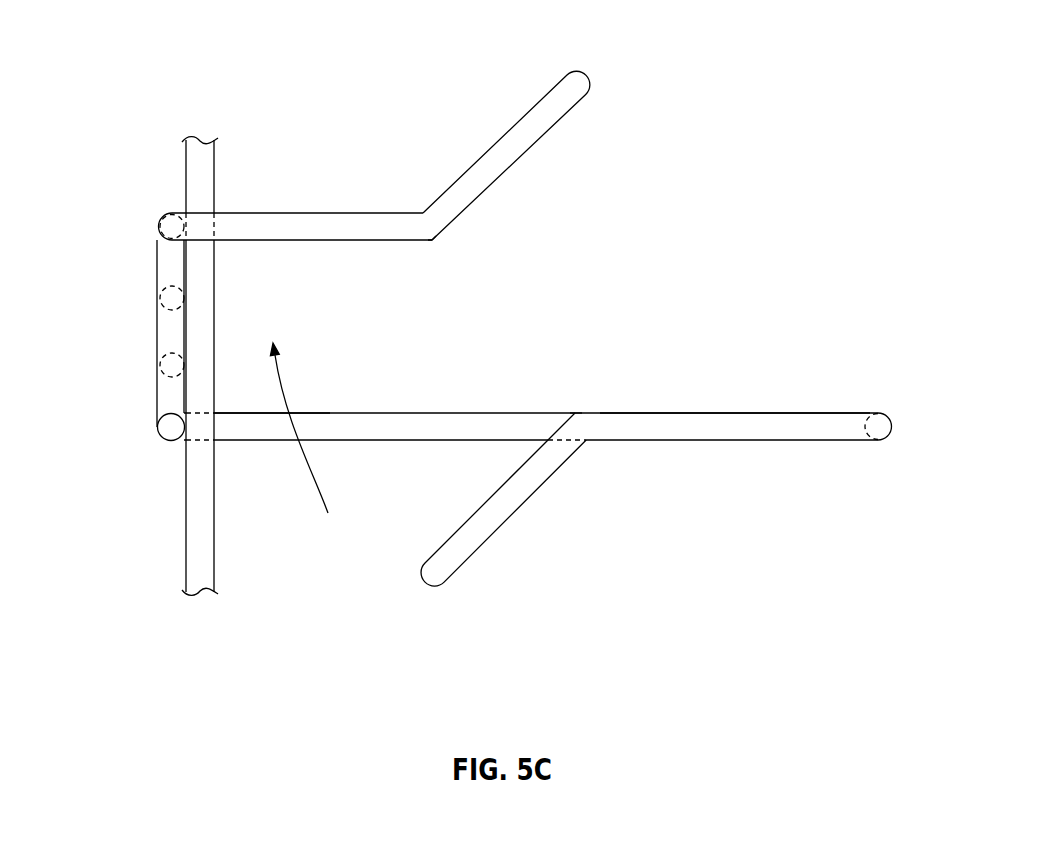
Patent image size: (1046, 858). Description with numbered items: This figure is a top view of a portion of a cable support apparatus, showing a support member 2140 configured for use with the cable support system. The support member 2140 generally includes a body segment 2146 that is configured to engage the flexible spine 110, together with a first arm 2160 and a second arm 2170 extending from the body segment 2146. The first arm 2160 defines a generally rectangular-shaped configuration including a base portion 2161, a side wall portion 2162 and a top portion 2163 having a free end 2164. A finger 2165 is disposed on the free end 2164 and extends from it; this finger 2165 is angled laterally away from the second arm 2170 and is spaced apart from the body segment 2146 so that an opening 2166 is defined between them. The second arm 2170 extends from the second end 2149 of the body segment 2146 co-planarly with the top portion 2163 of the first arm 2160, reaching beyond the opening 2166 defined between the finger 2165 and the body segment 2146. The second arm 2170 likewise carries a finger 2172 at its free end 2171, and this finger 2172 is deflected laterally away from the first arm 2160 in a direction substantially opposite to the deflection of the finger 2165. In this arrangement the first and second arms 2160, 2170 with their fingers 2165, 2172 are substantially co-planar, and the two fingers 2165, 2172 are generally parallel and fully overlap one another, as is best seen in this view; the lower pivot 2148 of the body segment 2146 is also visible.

The flexible spine 110 is at (186, 543).
The support member 2140 is at (720, 56).
The body segment 2146 is at (170, 333).
The lower pivot 2148 is at (170, 428).
The second end 2149 is at (166, 225).
The first arm 2160 is at (358, 432).
The base portion 2161 is at (245, 432).
The side wall portion 2162 is at (878, 433).
The top portion 2163 is at (737, 432).
The free end 2164 is at (577, 422).
The finger 2165 is at (492, 513).
The opening 2166 is at (309, 447).
The second arm 2170 is at (312, 222).
The free end 2171 is at (430, 228).
The finger 2172 is at (505, 150).